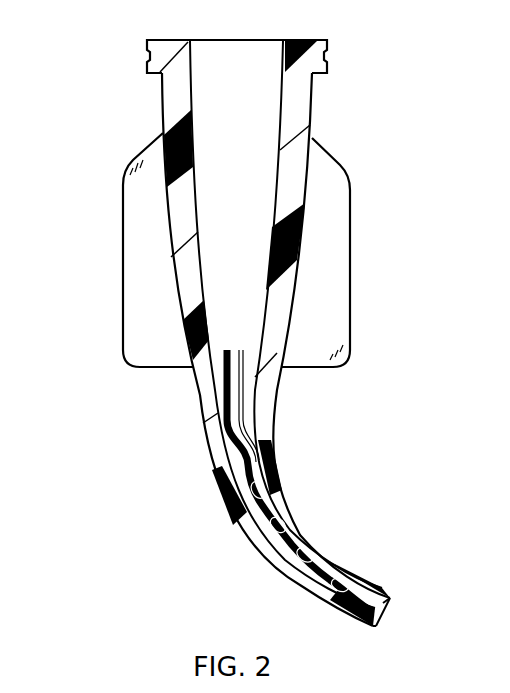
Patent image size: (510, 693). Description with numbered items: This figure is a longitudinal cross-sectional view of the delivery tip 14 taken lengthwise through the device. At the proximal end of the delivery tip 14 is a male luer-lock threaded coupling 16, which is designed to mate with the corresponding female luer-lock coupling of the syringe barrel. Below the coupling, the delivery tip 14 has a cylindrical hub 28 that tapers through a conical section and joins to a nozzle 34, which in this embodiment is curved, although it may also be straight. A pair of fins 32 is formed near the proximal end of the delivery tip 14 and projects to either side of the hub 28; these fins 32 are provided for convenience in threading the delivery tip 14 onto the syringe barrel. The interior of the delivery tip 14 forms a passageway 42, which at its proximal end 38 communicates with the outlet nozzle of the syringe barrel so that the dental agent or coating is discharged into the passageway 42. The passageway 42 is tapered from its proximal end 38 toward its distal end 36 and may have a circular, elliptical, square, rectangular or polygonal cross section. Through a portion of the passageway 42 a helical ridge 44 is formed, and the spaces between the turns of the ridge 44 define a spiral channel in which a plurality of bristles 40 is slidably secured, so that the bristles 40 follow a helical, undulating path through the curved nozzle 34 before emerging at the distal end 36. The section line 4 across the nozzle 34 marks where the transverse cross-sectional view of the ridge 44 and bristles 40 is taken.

The section line of FIG. 4 is at (357, 553).
The delivery tip 14 is at (130, 123).
The male luer-lock threaded coupling 16 is at (328, 66).
The cylindrical hub 28 is at (313, 108).
The fins 32 is at (143, 267).
The nozzle 34 is at (283, 488).
The distal end 36 is at (383, 627).
The proximal end 38 is at (249, 40).
The bristles 40 is at (393, 603).
The passageway 42 is at (244, 111).
The helical ridge 44 is at (243, 423).